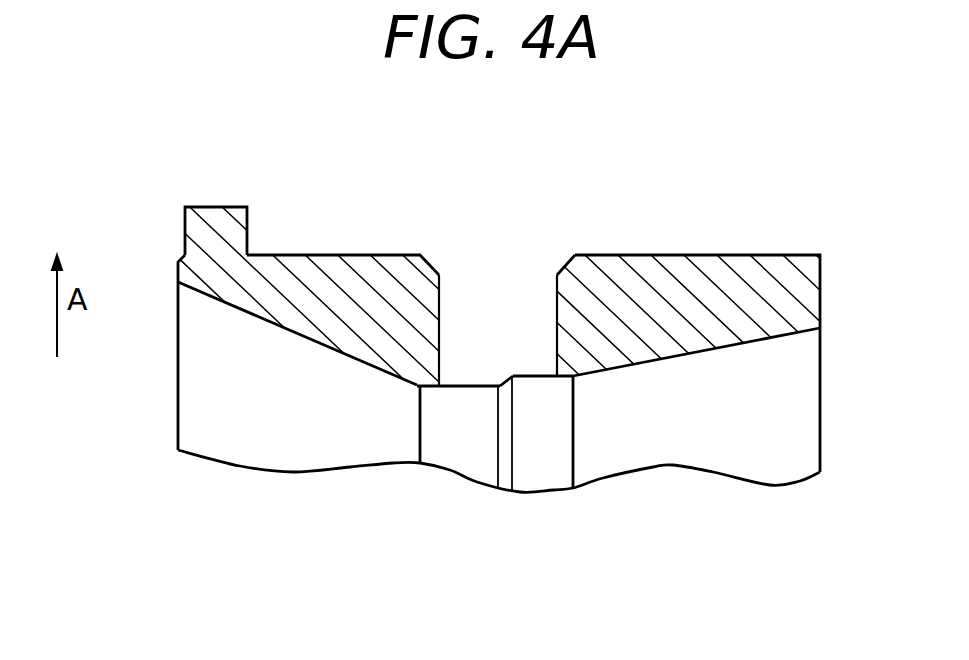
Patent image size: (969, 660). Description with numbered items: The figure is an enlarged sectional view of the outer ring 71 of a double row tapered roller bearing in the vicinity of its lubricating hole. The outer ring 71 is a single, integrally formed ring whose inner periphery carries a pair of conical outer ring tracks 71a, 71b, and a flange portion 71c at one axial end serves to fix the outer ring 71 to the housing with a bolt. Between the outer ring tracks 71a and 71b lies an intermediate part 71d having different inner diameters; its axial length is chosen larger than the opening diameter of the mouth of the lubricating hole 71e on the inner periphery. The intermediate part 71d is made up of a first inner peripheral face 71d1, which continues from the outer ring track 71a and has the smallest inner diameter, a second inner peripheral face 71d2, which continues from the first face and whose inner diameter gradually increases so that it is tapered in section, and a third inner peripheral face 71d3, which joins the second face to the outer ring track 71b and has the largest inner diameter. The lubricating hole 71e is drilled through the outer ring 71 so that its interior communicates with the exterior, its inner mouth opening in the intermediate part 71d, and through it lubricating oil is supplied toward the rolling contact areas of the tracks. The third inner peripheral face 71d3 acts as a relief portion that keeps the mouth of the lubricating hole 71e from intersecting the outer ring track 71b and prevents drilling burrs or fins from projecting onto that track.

The outer ring 71 is at (682, 222).
The outer ring track 71a is at (267, 321).
The outer ring track 71b is at (732, 346).
The flange portion 71c is at (193, 228).
The intermediate part 71d is at (472, 398).
The first inner peripheral face 71d1 is at (450, 388).
The second inner peripheral face 71d2 is at (501, 388).
The third inner peripheral face 71d3 is at (543, 380).
The lubricating hole 71e is at (557, 315).